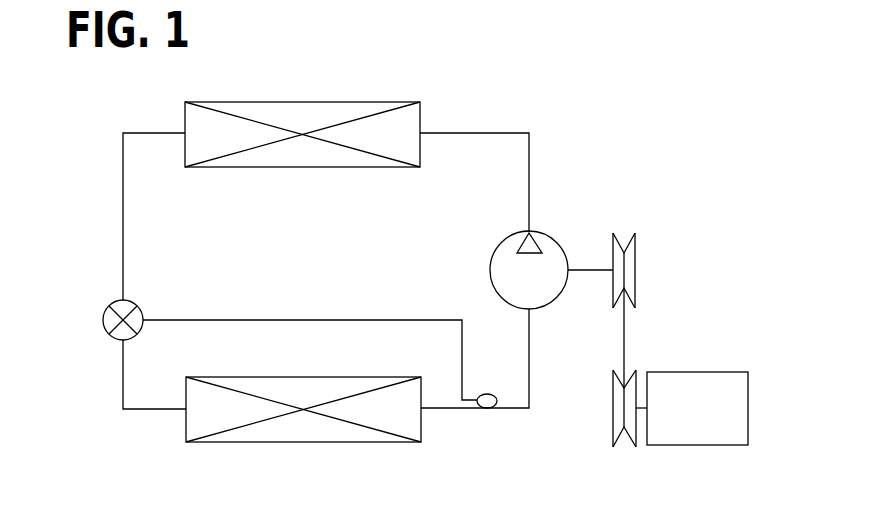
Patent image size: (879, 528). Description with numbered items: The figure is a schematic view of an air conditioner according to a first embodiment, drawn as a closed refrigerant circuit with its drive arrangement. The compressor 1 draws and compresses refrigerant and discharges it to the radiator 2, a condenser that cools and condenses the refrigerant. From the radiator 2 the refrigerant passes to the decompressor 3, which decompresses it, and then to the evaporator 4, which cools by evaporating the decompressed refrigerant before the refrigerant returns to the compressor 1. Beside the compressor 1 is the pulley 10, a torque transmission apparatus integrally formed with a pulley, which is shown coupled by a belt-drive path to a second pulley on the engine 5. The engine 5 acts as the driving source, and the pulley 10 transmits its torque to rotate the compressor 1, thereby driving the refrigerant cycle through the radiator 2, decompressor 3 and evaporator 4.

The compressor 1 is at (561, 240).
The radiator 2 is at (380, 101).
The decompressor 3 is at (144, 312).
The evaporator 4 is at (305, 443).
The engine 5 is at (748, 404).
The pulley 10 is at (636, 261).